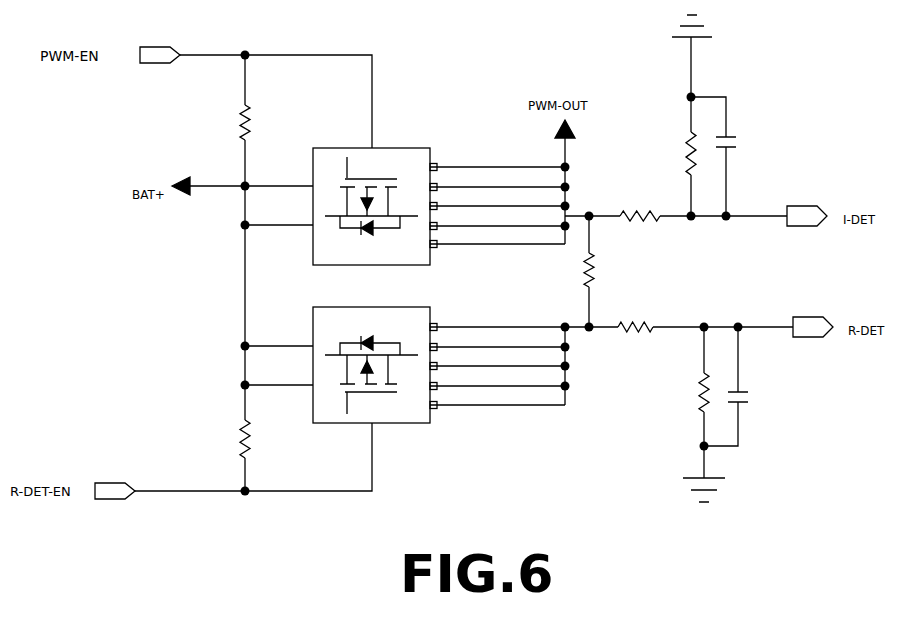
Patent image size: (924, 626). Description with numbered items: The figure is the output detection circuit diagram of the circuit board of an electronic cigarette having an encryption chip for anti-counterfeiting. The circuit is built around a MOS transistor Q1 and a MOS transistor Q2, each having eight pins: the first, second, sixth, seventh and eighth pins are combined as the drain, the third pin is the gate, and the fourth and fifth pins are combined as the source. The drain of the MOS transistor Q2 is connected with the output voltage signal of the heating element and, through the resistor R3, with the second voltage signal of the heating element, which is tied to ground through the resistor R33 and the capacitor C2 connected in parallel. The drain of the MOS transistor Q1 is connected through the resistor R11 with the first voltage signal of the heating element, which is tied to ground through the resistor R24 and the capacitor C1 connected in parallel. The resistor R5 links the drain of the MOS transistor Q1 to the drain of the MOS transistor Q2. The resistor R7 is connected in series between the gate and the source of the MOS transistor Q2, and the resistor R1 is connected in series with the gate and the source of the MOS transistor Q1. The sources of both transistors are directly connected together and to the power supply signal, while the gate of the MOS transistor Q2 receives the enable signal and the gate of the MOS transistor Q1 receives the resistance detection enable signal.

The MOS transistor Q1 is at (432, 379).
The MOS transistor Q2 is at (432, 197).
The resistor R1 is at (235, 439).
The resistor R3 is at (640, 207).
The resistor R5 is at (578, 271).
The resistor R7 is at (232, 122).
The resistor R11 is at (635, 318).
The resistor R24 is at (688, 386).
The resistor R33 is at (676, 174).
The capacitor C1 is at (755, 365).
The capacitor C2 is at (741, 176).